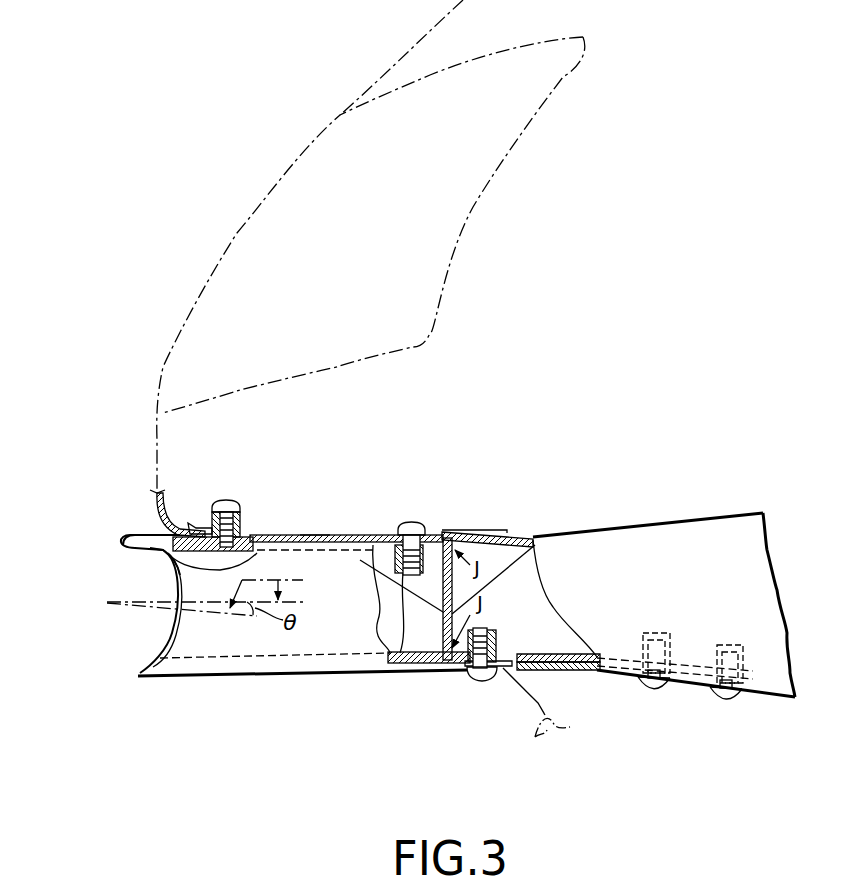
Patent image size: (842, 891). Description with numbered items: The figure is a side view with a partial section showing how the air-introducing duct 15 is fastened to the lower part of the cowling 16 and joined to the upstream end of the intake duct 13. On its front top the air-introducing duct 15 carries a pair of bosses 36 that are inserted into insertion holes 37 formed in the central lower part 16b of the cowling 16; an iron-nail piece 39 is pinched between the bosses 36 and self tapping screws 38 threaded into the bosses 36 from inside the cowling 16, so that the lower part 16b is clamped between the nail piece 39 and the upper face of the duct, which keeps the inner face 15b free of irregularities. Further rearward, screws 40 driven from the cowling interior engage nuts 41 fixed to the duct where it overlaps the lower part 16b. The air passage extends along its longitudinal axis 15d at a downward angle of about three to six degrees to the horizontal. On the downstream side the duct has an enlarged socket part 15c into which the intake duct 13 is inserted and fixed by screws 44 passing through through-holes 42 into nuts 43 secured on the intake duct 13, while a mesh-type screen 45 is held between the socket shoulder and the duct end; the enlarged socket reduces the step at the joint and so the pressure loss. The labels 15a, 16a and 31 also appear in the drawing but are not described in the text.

The intake duct 13 is at (630, 523).
The air-introducing duct 15 is at (250, 673).
The upper flange of panel 15a is at (123, 540).
The inner face 15b is at (163, 552).
The enlarged socket part 15c is at (488, 532).
The longitudinal axis 15d is at (289, 588).
The cowling 16 is at (413, 43).
The glass seal 16a is at (155, 510).
The central lower part of the cowling 16b is at (310, 533).
The window opening 31 is at (277, 205).
The bosses 36 is at (250, 525).
The insertion holes 37 is at (262, 535).
The self tapping screws 38 is at (228, 502).
The iron-nail piece 39 is at (205, 522).
The screws 40 is at (413, 522).
The nuts 41 is at (441, 535).
The through-holes 42 is at (470, 677).
The nuts 43 is at (545, 668).
The screws 44 is at (483, 680).
The mesh-type screen 45 is at (536, 545).